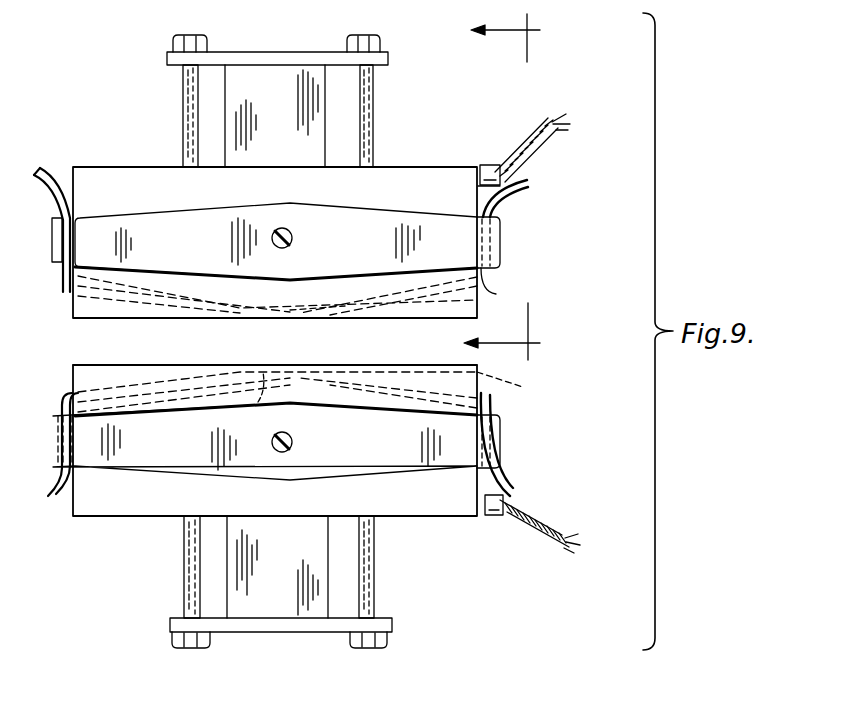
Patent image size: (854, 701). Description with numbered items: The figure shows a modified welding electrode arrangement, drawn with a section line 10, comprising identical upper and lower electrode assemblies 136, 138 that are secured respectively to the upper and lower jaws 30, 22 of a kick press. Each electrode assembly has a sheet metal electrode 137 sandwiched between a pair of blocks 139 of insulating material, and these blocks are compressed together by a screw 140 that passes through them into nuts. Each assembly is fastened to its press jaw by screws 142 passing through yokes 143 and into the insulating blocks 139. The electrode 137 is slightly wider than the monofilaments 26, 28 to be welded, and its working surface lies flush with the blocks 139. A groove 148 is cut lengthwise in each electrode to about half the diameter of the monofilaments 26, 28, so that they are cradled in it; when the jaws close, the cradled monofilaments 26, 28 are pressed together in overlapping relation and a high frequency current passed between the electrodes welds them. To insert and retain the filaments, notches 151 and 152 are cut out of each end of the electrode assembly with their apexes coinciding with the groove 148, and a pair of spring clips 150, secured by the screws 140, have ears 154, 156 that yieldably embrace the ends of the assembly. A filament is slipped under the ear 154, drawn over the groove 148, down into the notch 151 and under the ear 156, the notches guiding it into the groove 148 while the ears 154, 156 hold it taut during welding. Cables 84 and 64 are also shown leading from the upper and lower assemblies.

The section line 10 is at (481, 188).
The lower jaw 22 is at (277, 567).
The monofilament 26 is at (505, 484).
The monofilament 28 is at (527, 182).
The upper jaw 30 is at (275, 116).
The lower cable 64 is at (548, 540).
The upper cable 84 is at (518, 138).
The upper electrode assembly 136 is at (518, 216).
The sheet metal electrode 137 is at (180, 298).
The lower electrode assembly 138 is at (380, 176).
The insulating block 139 is at (195, 388).
The screw 140 is at (293, 237).
The screw 142 is at (185, 130).
The yoke 143 is at (285, 52).
The groove 148 is at (323, 310).
The spring clip 150 is at (186, 230).
The notch 151 is at (85, 306).
The notch 152 is at (495, 298).
The ear 154 is at (502, 236).
The ear 156 is at (52, 218).